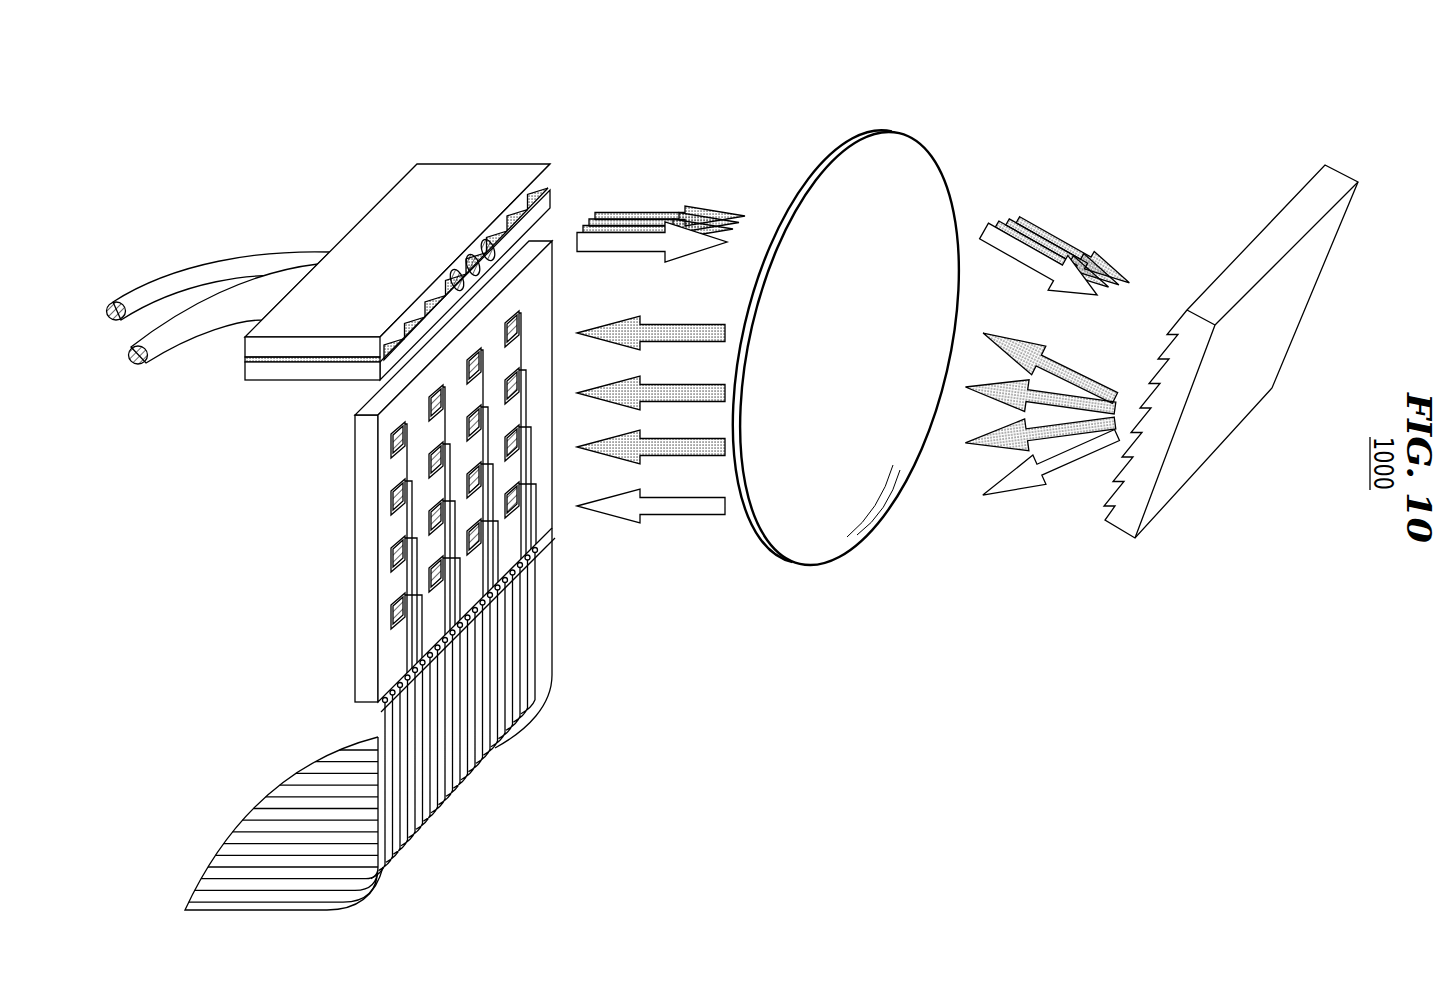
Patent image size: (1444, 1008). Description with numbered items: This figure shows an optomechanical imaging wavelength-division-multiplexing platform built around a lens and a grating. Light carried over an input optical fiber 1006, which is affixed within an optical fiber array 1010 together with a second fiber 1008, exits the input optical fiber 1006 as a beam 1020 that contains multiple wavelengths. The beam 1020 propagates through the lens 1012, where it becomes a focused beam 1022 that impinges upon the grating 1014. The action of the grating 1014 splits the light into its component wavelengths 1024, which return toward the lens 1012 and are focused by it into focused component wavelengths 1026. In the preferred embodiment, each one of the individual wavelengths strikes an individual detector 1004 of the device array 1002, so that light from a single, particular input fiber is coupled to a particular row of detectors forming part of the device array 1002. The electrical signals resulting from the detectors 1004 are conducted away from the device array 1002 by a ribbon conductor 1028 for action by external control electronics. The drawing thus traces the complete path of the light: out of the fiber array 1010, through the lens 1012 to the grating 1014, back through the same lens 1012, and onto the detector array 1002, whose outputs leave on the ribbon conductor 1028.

The device array 1002 is at (363, 600).
The detector 1004 is at (392, 498).
The input optical fiber 1006 is at (198, 257).
The optical fiber 1008 is at (172, 340).
The optical fiber array 1010 is at (473, 165).
The lens 1012 is at (925, 142).
The grating 1014 is at (1288, 332).
The beam 1020 is at (628, 212).
The focused beam 1022 is at (1047, 232).
The component wavelengths 1024 is at (1003, 495).
The focused component wavelengths 1026 is at (682, 515).
The ribbon conductor 1028 is at (480, 778).